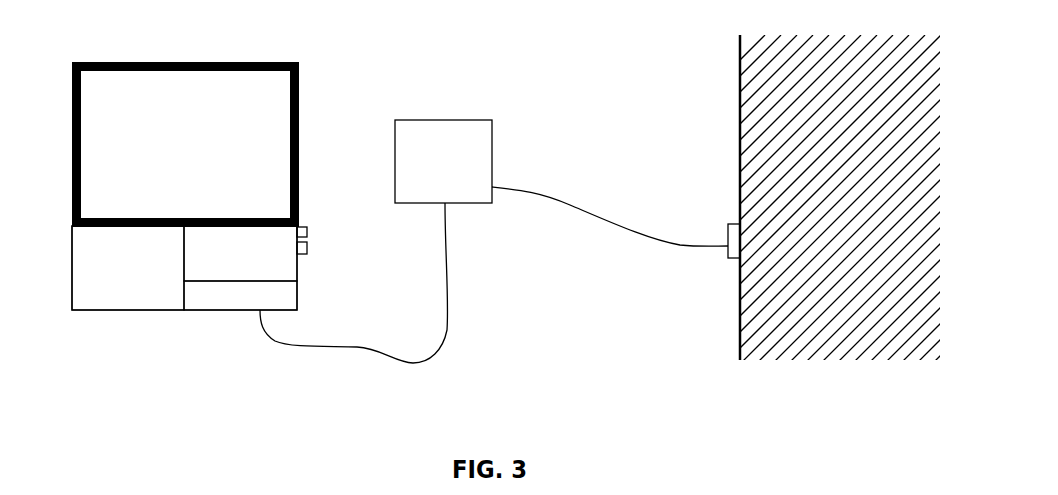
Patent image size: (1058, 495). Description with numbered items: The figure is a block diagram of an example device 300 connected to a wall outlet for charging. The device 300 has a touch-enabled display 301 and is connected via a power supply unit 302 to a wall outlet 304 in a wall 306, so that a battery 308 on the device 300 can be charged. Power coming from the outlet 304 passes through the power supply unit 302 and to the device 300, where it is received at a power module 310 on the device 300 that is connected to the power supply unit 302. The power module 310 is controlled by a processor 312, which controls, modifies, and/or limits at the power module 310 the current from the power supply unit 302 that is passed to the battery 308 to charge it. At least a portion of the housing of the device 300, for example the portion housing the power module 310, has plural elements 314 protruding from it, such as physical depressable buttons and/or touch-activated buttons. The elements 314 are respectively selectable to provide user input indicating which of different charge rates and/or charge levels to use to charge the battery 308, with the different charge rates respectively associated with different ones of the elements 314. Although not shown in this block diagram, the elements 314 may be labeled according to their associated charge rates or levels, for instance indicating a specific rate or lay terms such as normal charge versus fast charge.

The device 300 is at (252, 62).
The touch-enabled display 301 is at (185, 145).
The power supply unit 302 is at (457, 120).
The wall outlet 304 is at (728, 232).
The wall 306 is at (894, 265).
The battery 308 is at (293, 305).
The power module 310 is at (293, 273).
The processor 312 is at (128, 268).
The elements 314 is at (306, 227).